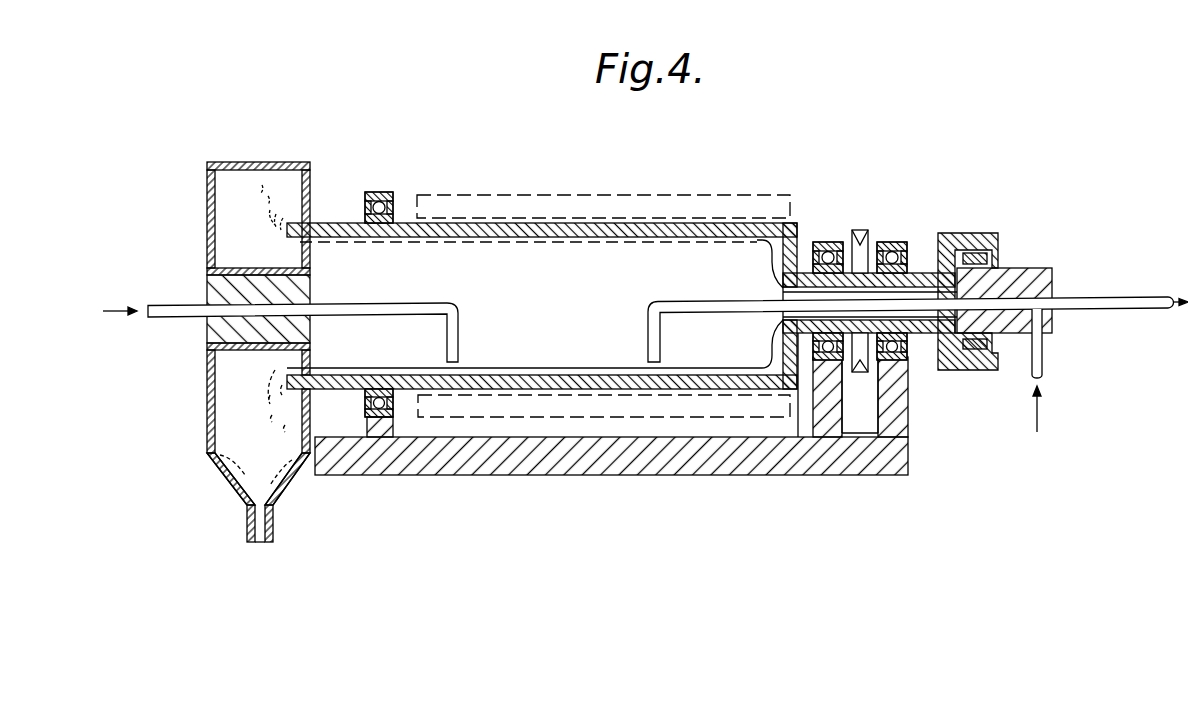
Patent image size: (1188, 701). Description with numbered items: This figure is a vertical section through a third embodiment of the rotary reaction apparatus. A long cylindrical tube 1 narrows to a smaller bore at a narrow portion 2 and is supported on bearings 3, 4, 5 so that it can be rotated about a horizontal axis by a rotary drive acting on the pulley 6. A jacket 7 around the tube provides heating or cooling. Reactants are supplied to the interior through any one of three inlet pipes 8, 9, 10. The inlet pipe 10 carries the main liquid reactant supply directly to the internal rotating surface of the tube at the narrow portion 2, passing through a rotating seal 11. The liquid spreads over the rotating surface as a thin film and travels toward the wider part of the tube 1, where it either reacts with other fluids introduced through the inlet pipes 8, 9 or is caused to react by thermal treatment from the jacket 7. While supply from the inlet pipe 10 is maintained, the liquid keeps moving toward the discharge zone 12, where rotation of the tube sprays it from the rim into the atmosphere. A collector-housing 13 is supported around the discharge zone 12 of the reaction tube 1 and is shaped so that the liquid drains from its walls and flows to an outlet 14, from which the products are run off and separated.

The cylindrical tube 1 is at (525, 230).
The narrow portion 2 is at (800, 273).
The bearing 3 is at (380, 194).
The bearing 4 is at (818, 253).
The bearing 5 is at (895, 245).
The pulley 6 is at (860, 238).
The jacket 7 is at (645, 408).
The inlet pipe 8 is at (166, 304).
The inlet pipe 9 is at (1108, 300).
The inlet pipe 10 is at (1045, 370).
The rotating seal 11 is at (984, 350).
The discharge zone 12 is at (270, 230).
The collector-housing 13 is at (223, 408).
The outlet 14 is at (258, 527).